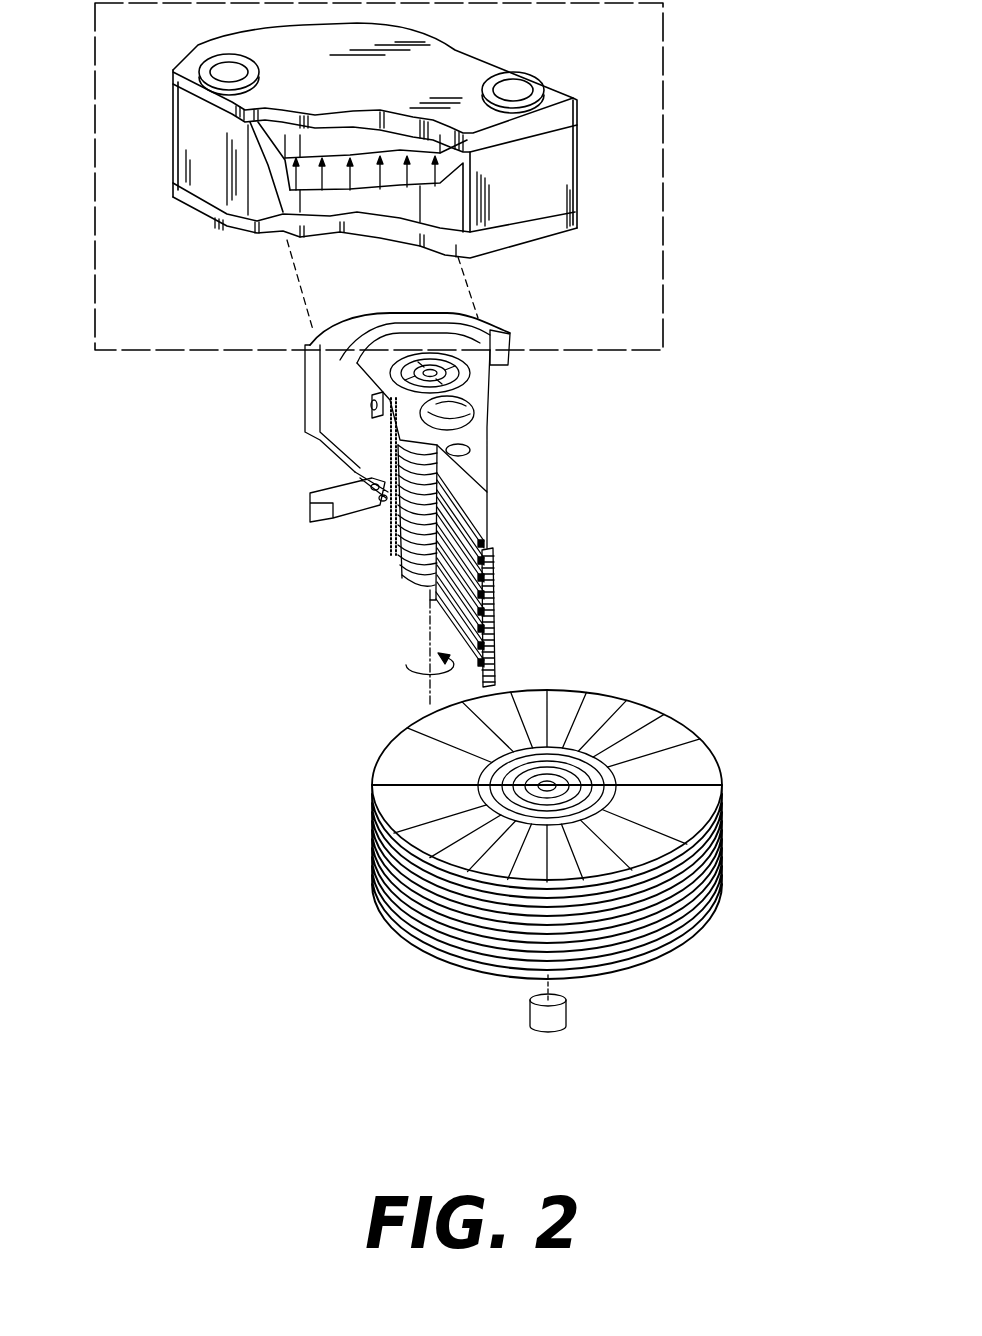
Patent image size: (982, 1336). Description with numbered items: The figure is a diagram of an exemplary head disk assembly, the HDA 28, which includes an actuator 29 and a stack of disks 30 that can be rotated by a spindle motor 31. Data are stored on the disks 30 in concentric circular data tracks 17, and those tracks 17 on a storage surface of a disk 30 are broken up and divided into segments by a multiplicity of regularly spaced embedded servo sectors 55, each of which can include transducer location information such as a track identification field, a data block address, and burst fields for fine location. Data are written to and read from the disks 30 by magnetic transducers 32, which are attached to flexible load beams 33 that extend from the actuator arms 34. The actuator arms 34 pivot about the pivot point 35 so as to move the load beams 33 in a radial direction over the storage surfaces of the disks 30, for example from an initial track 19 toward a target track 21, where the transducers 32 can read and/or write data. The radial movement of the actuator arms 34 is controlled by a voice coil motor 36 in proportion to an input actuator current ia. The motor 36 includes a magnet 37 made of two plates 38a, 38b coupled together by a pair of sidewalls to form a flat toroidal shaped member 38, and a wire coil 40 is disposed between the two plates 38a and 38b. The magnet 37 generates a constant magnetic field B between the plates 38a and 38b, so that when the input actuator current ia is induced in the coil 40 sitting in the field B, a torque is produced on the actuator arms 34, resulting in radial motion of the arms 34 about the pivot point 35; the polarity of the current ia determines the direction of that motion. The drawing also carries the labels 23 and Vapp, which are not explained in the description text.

The concentric circular data tracks 17 is at (570, 743).
The initial track 19 is at (612, 752).
The target track 21 is at (630, 787).
The servo wedge 23 is at (588, 752).
The head disk assembly 28 is at (556, 715).
The actuator 29 is at (338, 494).
The disks 30 is at (536, 836).
The spindle motor 31 is at (528, 1010).
The magnetic transducers 32 is at (493, 552).
The flexible load beams 33 is at (485, 500).
The actuator arms 34 is at (487, 430).
The pivot point 35 is at (462, 370).
The voice coil motor 36 is at (667, 163).
The magnet 37 is at (386, 146).
The flat toroidal shaped member 38 is at (562, 165).
The plate 38a is at (335, 137).
The plate 38b is at (330, 208).
The wire coil 40 is at (345, 336).
The embedded servo sectors 55 is at (395, 797).
The magnetic field B is at (290, 158).
The input actuator current ia is at (399, 326).
The applied voltage Vapp is at (517, 293).